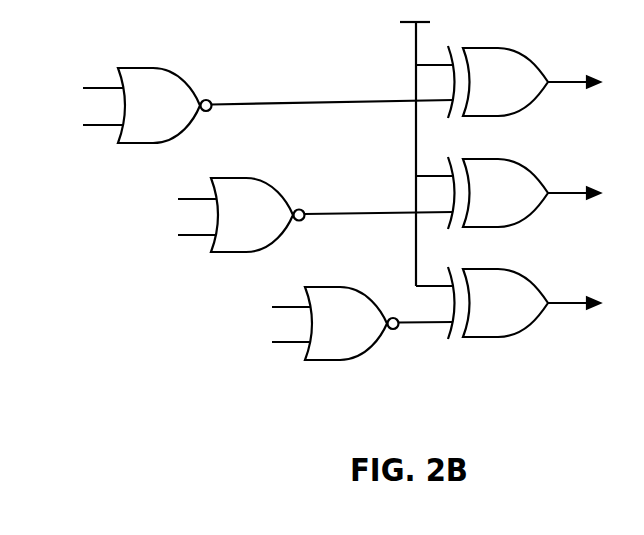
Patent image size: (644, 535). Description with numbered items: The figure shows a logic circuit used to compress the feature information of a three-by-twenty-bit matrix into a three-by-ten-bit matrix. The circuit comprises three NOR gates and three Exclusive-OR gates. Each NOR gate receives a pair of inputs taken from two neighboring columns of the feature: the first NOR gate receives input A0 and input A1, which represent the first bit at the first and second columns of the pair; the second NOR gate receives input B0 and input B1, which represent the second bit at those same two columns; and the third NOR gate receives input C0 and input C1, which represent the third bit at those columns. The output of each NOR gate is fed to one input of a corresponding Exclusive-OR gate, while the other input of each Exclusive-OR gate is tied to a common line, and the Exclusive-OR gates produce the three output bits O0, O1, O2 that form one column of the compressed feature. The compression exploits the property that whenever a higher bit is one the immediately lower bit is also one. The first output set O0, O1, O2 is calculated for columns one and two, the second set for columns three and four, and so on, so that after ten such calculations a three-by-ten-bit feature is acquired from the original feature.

The input A0 is at (88, 91).
The input A1 is at (88, 128).
The input B0 is at (182, 202).
The input B1 is at (182, 238).
The input C0 is at (275, 310).
The input C1 is at (275, 345).
The output O0 is at (589, 85).
The output O1 is at (589, 196).
The output O2 is at (589, 306).